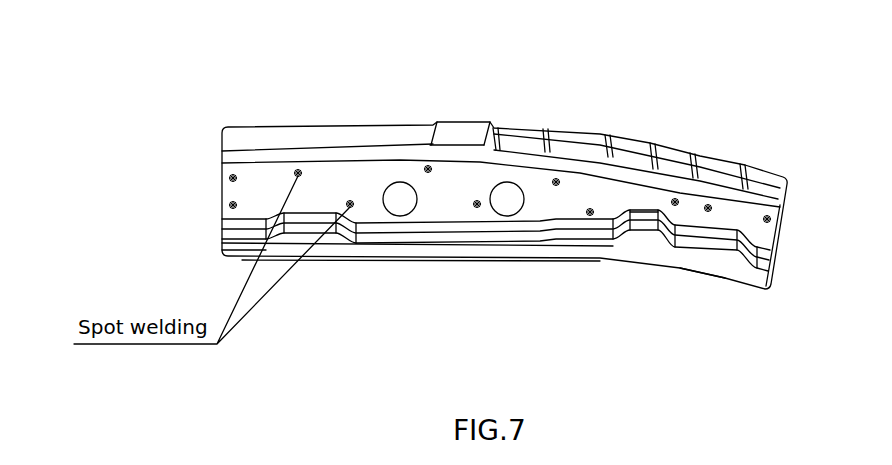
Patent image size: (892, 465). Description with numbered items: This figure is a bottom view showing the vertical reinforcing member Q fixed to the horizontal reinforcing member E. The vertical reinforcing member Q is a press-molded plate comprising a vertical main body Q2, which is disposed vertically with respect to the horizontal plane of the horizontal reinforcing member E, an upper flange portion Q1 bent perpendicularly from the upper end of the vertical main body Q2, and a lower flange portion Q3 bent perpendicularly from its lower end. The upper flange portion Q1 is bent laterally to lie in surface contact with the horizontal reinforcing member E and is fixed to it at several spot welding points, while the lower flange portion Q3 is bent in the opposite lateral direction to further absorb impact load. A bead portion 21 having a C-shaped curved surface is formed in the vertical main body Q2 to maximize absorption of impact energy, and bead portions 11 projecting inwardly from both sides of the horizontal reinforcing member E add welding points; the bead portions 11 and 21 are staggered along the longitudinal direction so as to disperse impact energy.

The horizontal reinforcing member E is at (262, 120).
The upper flange portion Q1 is at (330, 172).
The vertical main body Q2 is at (388, 240).
The lower flange portion Q3 is at (463, 252).
The vertical reinforcing member Q is at (337, 268).
The bead portion 11 is at (513, 137).
The bead portion 21 is at (650, 228).